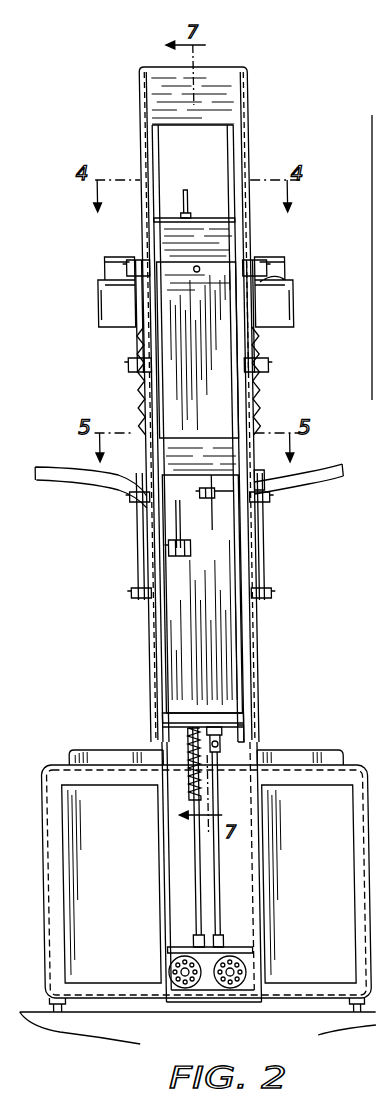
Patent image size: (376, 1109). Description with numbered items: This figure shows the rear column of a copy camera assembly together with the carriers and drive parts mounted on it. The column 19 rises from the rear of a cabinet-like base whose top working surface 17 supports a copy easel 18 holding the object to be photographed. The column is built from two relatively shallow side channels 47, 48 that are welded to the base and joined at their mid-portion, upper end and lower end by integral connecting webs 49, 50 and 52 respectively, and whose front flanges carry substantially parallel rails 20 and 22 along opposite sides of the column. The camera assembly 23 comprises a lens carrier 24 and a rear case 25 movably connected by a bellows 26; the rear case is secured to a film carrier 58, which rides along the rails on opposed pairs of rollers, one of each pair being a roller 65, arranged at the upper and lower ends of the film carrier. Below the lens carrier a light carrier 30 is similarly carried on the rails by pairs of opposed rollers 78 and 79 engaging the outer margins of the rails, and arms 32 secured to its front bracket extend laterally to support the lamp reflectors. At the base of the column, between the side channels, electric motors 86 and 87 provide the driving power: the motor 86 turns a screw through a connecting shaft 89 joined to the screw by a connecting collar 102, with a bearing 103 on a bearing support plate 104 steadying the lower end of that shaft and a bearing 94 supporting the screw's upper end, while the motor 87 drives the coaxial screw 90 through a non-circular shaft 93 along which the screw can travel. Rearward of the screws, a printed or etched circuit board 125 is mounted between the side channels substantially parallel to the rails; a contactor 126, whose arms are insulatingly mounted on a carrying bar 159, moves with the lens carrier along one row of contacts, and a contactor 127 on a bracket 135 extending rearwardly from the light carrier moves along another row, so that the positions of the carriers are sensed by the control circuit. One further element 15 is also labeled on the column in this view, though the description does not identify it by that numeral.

The connecting web 50 is at (219, 70).
The rail 22 is at (138, 146).
The rail 20 is at (244, 142).
The roller 65 is at (138, 257).
The film carrier 58 is at (270, 285).
The rear case 25 is at (288, 305).
The camera assembly 23 is at (256, 380).
The bellows 26 is at (253, 395).
The connecting web 49 is at (183, 445).
The carrying bar 159 is at (219, 493).
The lens carrier 24 is at (254, 480).
The roller 79 is at (138, 495).
The arm 32 is at (61, 488).
The contactor 126 is at (191, 510).
The contactor 127 is at (166, 528).
The bearing 94 is at (253, 548).
The light carrier 30 is at (253, 565).
The side channel 47 is at (150, 652).
The roller 78 is at (135, 592).
The column 19 is at (136, 630).
The side channel 48 is at (234, 636).
The bracket 135 is at (372, 637).
The mast 15 is at (246, 702).
The printed or etched circuit board 125 is at (153, 682).
The copy easel 18 is at (270, 748).
The top working surface 17 is at (341, 765).
The connecting collar 102 is at (209, 745).
The screw 90 is at (179, 780).
The shaft 93 is at (183, 863).
The connecting shaft 89 is at (205, 873).
The bearing 103 is at (209, 935).
The bearing support plate 104 is at (222, 945).
The electric motor 86 is at (224, 960).
The electric motor 87 is at (153, 958).
The connecting web 52 is at (203, 995).